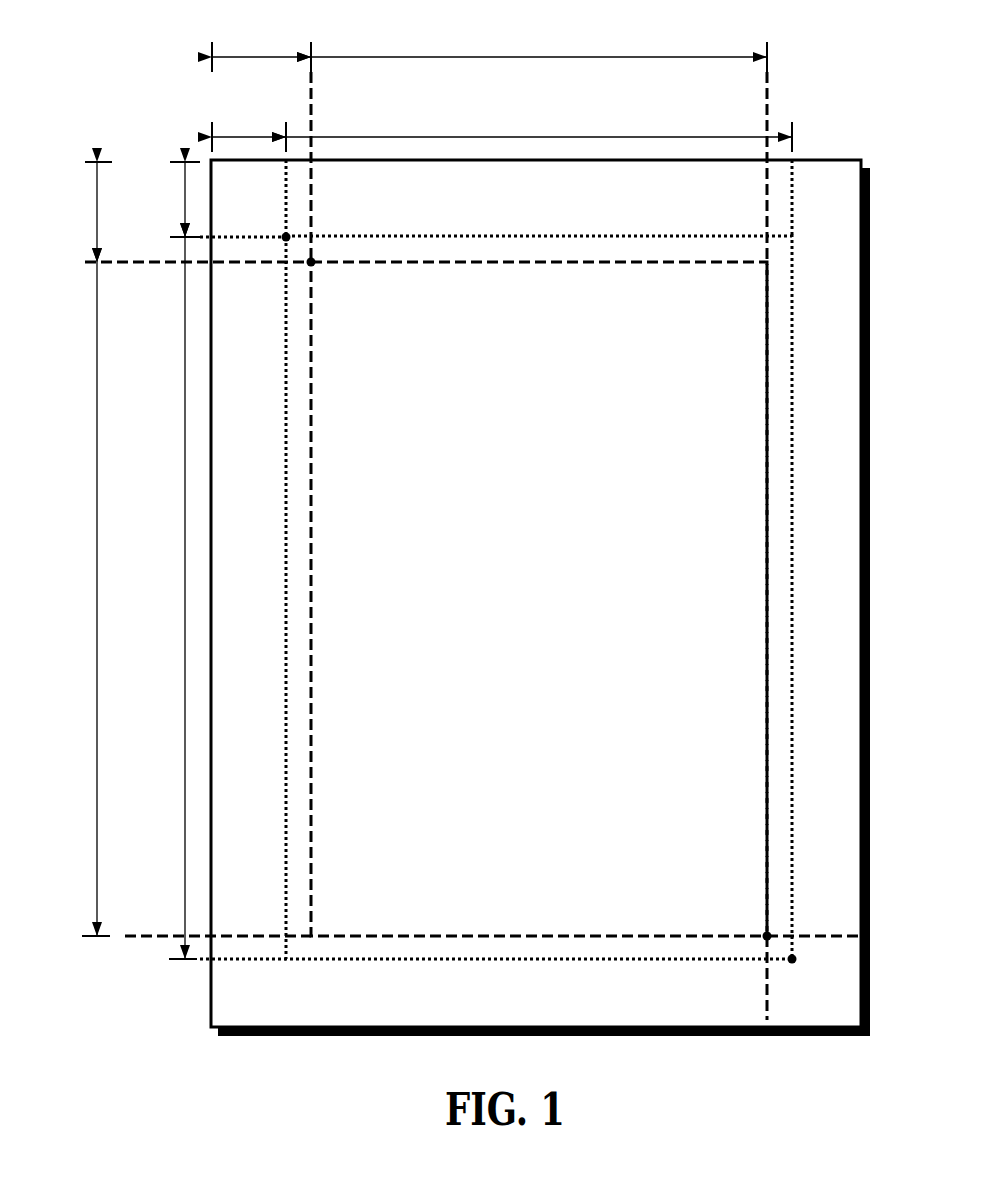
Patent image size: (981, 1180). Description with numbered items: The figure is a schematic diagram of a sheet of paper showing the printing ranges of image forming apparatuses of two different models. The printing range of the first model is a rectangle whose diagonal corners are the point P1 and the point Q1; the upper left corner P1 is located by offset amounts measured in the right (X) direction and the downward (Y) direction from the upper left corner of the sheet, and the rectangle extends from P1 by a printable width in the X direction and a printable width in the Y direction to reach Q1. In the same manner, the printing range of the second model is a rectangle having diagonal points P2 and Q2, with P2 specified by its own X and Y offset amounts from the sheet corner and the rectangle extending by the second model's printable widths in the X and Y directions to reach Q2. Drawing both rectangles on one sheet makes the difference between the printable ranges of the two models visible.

The diagonal point of first model printing range P1 is at (314, 265).
The diagonal point of second model printing range P2 is at (284, 235).
The diagonal point of first model printing range Q1 is at (765, 934).
The diagonal point of second model printing range Q2 is at (794, 961).